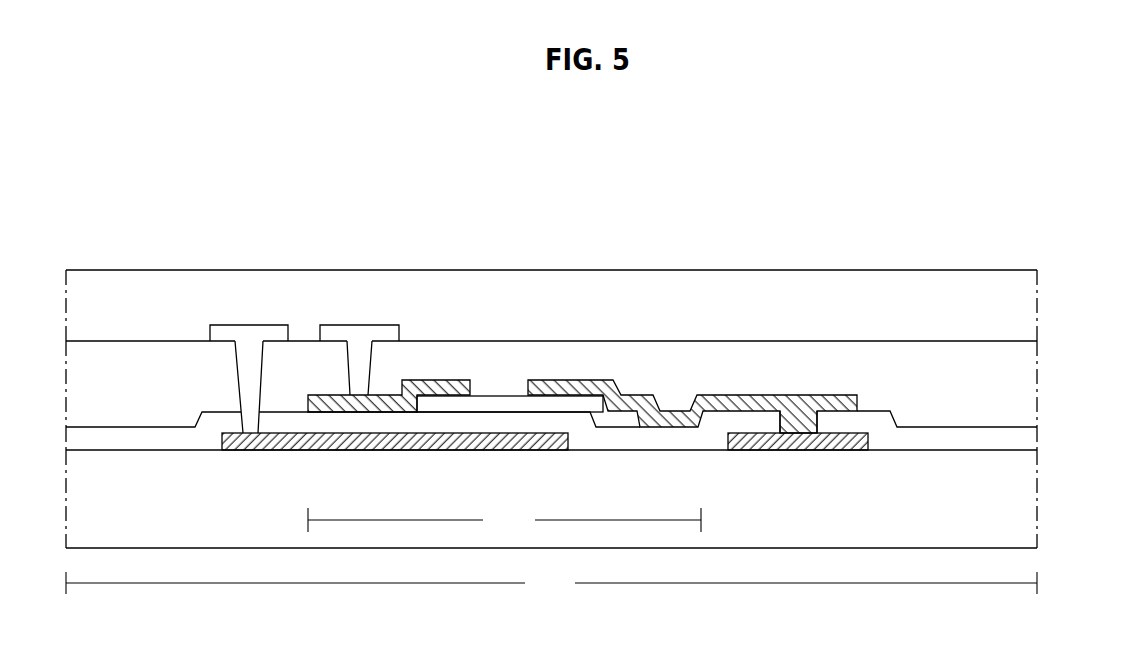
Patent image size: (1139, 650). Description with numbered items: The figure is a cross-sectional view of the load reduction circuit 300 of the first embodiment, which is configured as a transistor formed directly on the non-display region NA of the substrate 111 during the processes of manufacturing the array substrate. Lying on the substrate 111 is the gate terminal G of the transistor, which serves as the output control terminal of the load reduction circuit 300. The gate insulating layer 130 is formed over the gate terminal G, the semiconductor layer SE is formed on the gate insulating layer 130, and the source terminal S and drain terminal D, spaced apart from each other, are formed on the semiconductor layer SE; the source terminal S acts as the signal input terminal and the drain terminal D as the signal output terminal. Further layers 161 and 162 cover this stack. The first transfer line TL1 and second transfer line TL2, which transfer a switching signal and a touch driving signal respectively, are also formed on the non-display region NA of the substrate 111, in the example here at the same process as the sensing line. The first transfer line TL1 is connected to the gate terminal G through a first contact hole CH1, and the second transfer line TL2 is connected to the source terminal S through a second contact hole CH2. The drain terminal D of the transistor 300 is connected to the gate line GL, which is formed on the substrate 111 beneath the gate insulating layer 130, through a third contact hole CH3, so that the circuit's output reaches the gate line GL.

The second insulating layer (upper) 162 is at (1020, 313).
The first insulating layer (passivation) 161 is at (1020, 393).
The gate insulating layer 130 is at (1020, 440).
The substrate 111 is at (1020, 509).
The gate terminal G is at (378, 440).
The gate line GL is at (792, 442).
The semiconductor layer SE is at (550, 403).
The source terminal S is at (439, 385).
The drain terminal D is at (580, 388).
The first contact hole CH1 is at (252, 376).
The second contact hole CH2 is at (356, 373).
The third contact hole CH3 is at (798, 420).
The first transfer line TL1 is at (256, 330).
The second transfer line TL2 is at (357, 330).
The load reduction circuit 300 is at (504, 520).
The non-display region NA is at (551, 582).